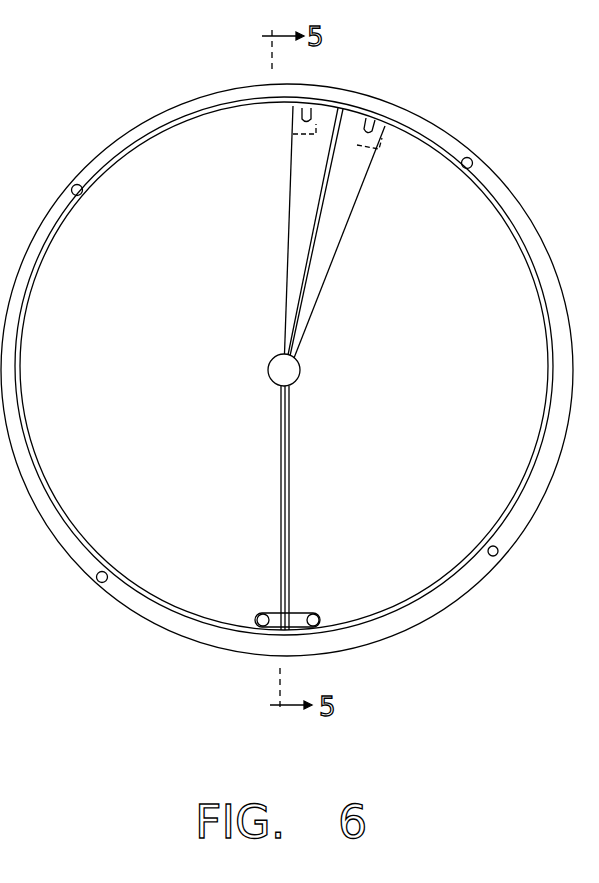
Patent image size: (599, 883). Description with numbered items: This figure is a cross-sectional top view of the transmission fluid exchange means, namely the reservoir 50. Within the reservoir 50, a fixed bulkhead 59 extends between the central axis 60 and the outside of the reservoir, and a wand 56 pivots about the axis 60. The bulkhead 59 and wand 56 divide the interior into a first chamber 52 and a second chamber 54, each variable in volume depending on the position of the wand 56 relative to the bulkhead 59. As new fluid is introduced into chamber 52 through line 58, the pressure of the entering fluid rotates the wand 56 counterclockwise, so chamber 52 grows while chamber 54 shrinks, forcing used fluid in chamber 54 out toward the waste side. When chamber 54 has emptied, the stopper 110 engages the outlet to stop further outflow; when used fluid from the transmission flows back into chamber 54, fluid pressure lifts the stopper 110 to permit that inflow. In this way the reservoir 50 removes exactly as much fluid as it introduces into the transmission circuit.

The reservoir 50 is at (125, 103).
The first compartment or chamber 52 is at (448, 454).
The second compartment or chamber 54 is at (208, 444).
The wand 56 is at (291, 540).
The line 58 is at (366, 94).
The bulkhead 59 is at (288, 287).
The axis 60 is at (269, 366).
The stopper 110 is at (323, 613).